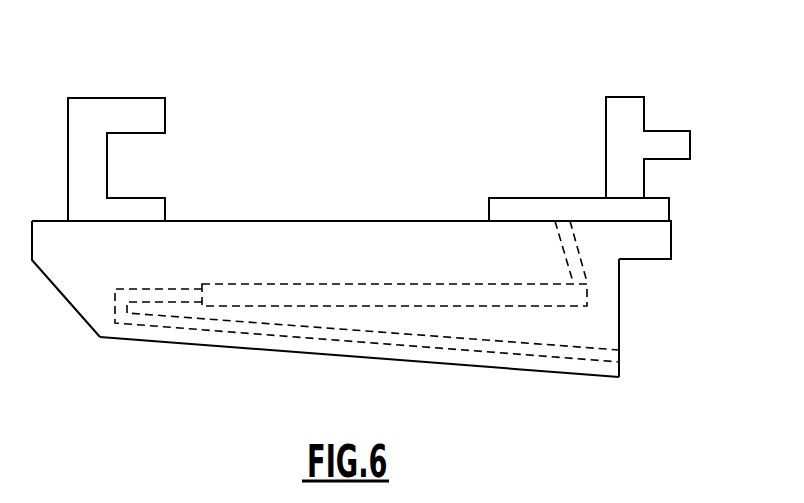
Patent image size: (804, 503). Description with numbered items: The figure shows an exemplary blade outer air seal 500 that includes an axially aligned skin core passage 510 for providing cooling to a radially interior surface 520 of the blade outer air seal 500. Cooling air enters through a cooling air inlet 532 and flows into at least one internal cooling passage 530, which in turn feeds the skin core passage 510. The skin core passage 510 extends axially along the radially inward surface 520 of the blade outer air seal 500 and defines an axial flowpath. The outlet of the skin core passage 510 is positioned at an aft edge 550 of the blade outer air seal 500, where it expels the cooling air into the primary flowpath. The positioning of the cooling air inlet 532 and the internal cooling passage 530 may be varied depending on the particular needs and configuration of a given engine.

The blade outer air seal 500 is at (386, 82).
The skin core passage 510 is at (435, 349).
The radially interior surface 520 is at (152, 340).
The internal cooling passage 530 is at (257, 295).
The cooling air inlet 532 is at (561, 221).
The aft edge 550 is at (619, 316).